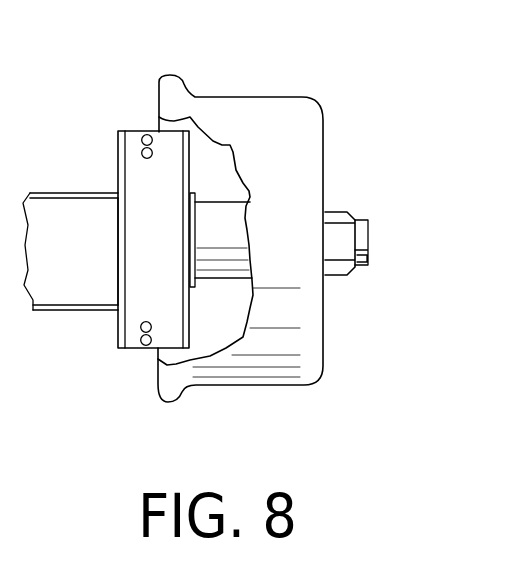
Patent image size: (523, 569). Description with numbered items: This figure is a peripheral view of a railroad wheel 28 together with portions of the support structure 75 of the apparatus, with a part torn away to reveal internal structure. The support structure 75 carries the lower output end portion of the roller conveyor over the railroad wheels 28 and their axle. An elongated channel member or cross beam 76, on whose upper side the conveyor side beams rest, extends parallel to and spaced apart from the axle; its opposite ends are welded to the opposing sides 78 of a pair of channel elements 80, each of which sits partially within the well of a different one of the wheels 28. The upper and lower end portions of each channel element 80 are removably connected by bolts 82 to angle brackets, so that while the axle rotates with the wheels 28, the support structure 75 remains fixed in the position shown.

The railroad wheel 28 is at (292, 137).
The support structure 75 is at (108, 126).
The cross beam 76 is at (63, 213).
The opposing sides of channel element 78 is at (116, 253).
The channel element 80 is at (133, 312).
The bolts 82 is at (144, 128).